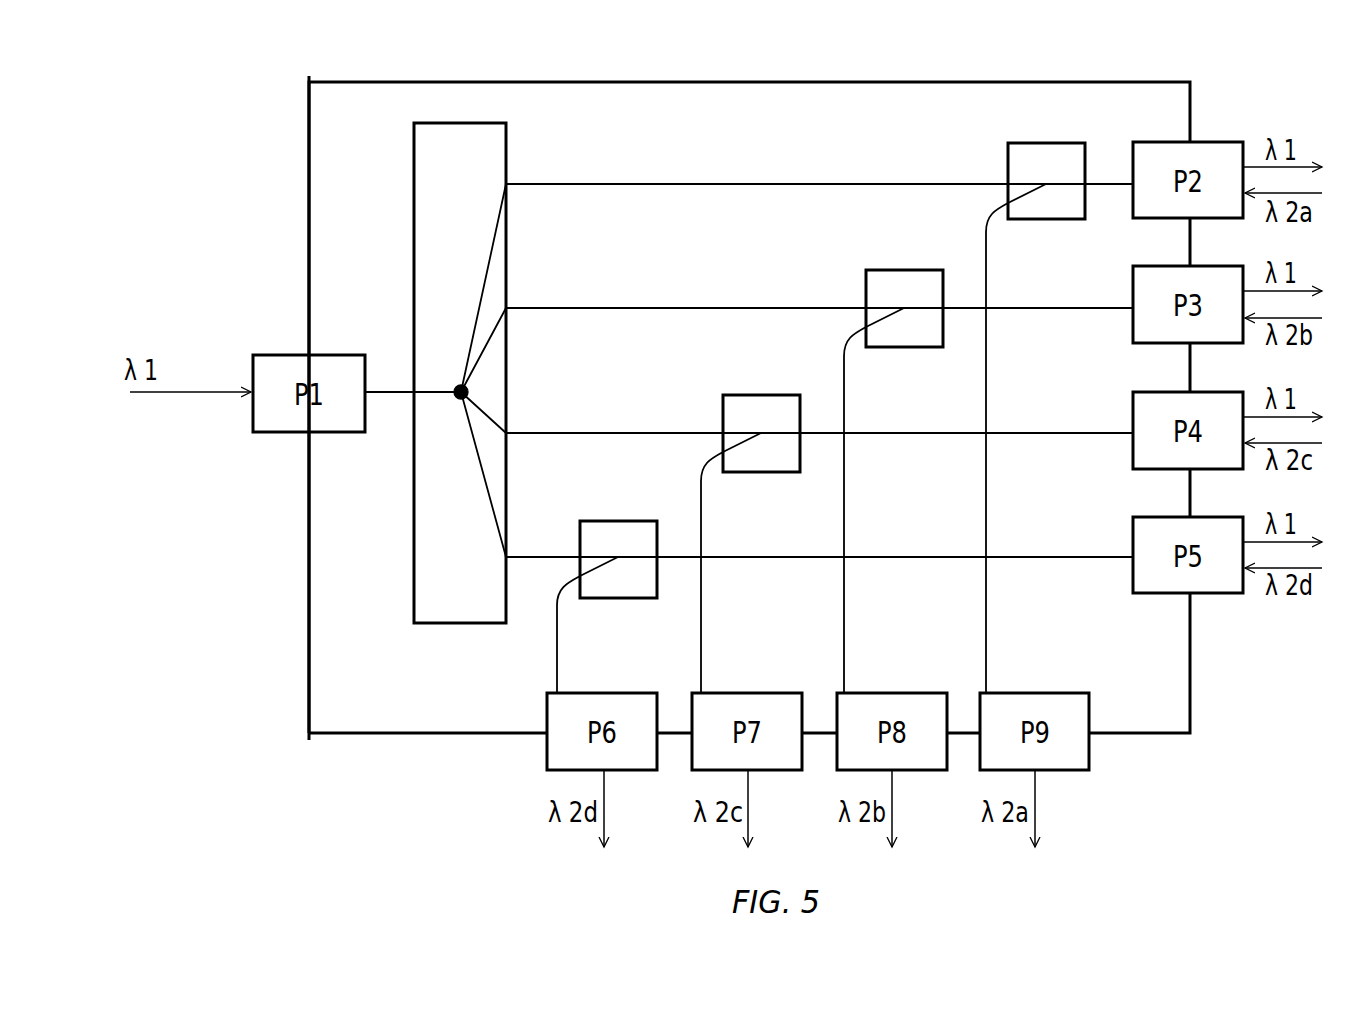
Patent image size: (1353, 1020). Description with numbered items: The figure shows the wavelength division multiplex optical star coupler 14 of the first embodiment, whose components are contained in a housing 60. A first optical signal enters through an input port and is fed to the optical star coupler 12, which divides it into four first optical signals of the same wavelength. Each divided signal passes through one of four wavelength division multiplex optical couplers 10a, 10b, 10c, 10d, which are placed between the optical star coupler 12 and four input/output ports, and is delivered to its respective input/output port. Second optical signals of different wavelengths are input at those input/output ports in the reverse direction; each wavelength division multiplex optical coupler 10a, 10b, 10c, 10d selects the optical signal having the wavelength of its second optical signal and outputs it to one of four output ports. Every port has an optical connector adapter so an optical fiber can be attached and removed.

The wavelength division multiplex optical star coupler 14 is at (813, 60).
The housing 60 is at (309, 258).
The optical star coupler 12 is at (508, 150).
The wavelength division multiplex optical coupler 10a is at (1008, 148).
The wavelength division multiplex optical coupler 10b is at (866, 283).
The wavelength division multiplex optical coupler 10c is at (723, 410).
The wavelength division multiplex optical coupler 10d is at (590, 521).